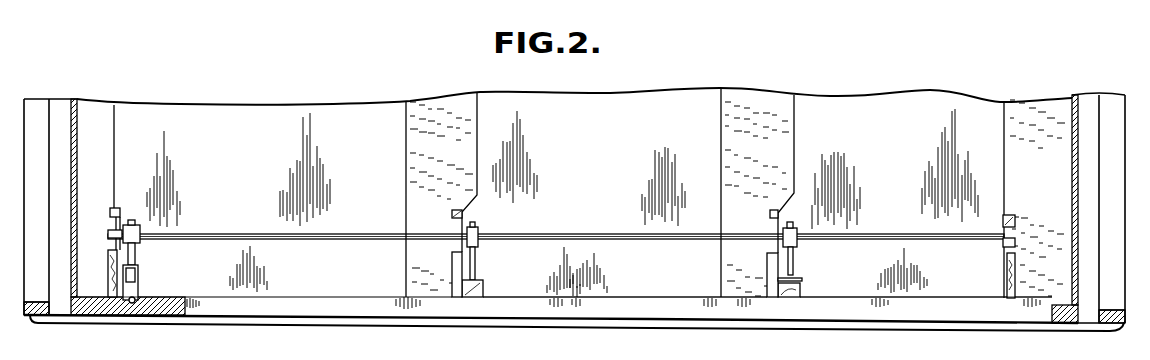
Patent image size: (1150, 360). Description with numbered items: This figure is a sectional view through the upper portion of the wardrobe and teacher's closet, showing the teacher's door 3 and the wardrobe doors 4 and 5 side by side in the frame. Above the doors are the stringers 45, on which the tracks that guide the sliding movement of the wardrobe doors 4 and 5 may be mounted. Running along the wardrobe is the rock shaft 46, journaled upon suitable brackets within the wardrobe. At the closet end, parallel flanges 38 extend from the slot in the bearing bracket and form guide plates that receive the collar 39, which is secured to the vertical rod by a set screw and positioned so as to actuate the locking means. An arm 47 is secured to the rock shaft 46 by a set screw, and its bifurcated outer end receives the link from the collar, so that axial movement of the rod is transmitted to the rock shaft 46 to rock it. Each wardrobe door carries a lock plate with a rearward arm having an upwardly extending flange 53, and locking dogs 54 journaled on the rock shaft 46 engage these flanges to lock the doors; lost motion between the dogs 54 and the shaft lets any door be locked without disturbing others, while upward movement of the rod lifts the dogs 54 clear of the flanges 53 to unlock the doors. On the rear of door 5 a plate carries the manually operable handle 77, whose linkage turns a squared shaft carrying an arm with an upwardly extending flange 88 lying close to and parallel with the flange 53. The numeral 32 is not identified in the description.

The teacher's door 3 is at (263, 310).
The wardrobe door 4 is at (668, 312).
The wardrobe door 5 is at (958, 317).
The base member 32 is at (9, 348).
The parallel flanges 38 is at (111, 315).
The collar 39 is at (138, 292).
The stringers 45 is at (97, 153).
The rock shaft 46 is at (360, 235).
The arm 47 is at (138, 252).
The upwardly extending flange 53 is at (462, 274).
The locking dogs 54 is at (480, 272).
The manually operable handle 77 is at (1020, 298).
The upwardly extending flange 88 is at (802, 280).